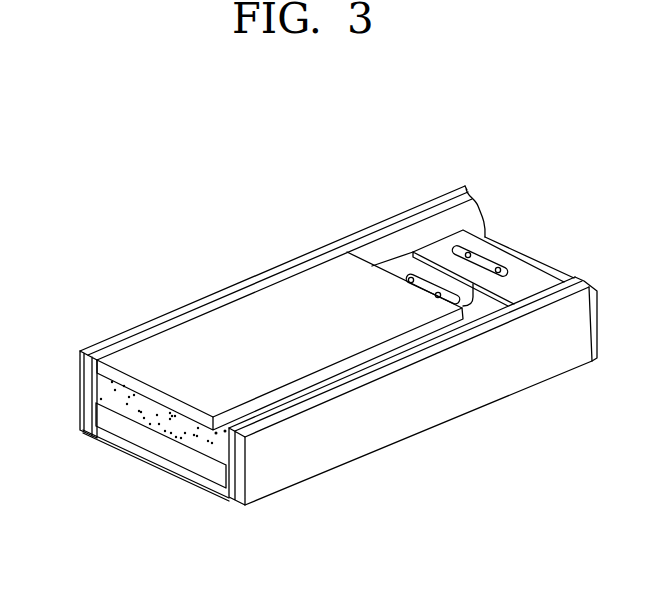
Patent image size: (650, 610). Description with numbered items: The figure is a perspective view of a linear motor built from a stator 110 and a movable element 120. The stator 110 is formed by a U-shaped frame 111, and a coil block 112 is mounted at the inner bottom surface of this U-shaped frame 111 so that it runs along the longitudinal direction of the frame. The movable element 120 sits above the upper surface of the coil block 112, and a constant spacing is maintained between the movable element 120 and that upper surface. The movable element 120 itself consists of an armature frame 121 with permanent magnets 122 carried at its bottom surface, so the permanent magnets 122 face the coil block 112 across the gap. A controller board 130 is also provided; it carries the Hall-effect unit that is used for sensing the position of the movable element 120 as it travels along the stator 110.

The stator 110 is at (163, 467).
The U-shaped frame 111 is at (187, 478).
The coil block 112 is at (117, 431).
The movable element 120 is at (149, 348).
The armature frame 121 is at (80, 363).
The permanent magnets 122 is at (118, 396).
The controller board 130 is at (232, 470).